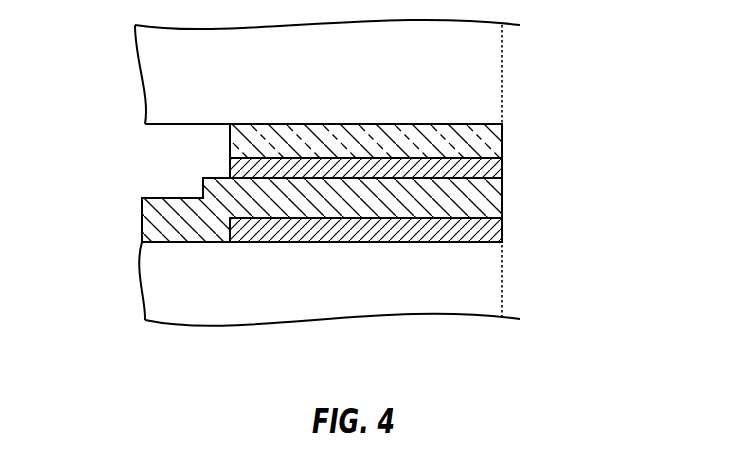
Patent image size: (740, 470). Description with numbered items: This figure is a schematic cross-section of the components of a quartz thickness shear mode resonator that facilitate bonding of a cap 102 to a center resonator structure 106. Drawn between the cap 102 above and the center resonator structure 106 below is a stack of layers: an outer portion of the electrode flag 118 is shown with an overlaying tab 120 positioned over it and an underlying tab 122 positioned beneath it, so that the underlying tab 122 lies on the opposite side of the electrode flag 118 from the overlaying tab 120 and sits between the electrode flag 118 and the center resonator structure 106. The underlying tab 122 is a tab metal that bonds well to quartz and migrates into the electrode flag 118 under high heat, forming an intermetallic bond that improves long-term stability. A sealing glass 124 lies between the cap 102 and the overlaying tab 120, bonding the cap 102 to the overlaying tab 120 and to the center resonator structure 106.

The cap 102 is at (334, 88).
The center resonator structure 106 is at (335, 288).
The electrode flag 118 is at (202, 183).
The overlaying tab 120 is at (492, 162).
The underlying tab 122 is at (492, 226).
The sealing glass 124 is at (492, 140).